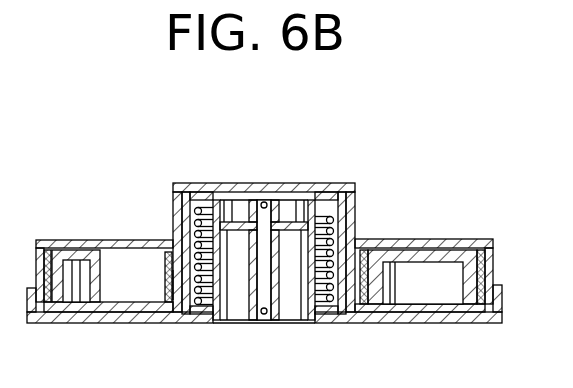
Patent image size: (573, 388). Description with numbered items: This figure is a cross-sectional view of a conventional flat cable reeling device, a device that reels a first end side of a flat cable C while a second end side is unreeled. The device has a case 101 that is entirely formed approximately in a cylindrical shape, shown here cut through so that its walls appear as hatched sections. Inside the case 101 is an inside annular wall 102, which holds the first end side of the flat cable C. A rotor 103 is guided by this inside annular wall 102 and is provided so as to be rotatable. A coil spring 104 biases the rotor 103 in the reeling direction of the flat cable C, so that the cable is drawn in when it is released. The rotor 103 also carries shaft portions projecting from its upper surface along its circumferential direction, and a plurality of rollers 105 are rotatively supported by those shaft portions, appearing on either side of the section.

The case 101 is at (462, 242).
The inside annular wall 102 is at (172, 265).
The rotor 103 is at (117, 300).
The coil spring 104 is at (325, 302).
The rollers 105 is at (65, 256).
The flat cable C is at (165, 282).